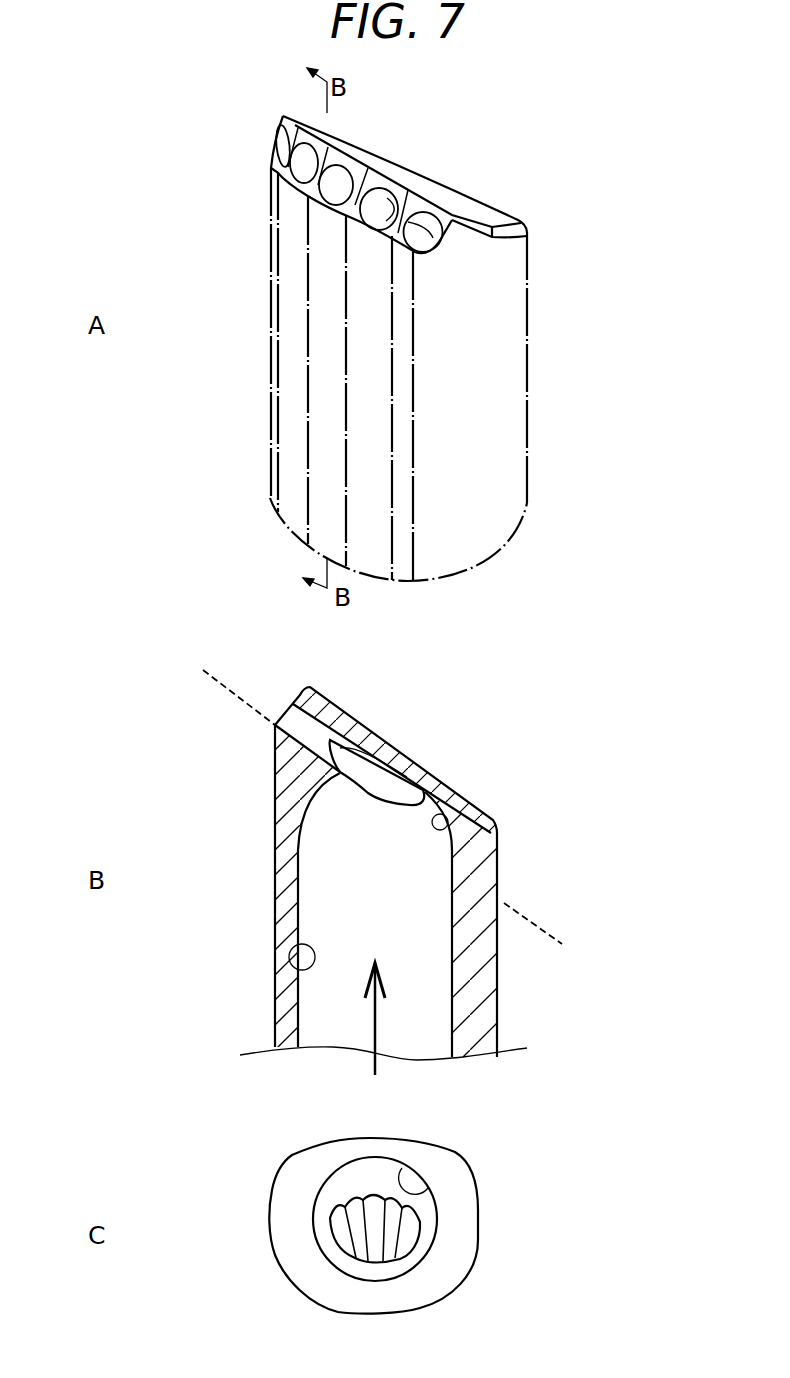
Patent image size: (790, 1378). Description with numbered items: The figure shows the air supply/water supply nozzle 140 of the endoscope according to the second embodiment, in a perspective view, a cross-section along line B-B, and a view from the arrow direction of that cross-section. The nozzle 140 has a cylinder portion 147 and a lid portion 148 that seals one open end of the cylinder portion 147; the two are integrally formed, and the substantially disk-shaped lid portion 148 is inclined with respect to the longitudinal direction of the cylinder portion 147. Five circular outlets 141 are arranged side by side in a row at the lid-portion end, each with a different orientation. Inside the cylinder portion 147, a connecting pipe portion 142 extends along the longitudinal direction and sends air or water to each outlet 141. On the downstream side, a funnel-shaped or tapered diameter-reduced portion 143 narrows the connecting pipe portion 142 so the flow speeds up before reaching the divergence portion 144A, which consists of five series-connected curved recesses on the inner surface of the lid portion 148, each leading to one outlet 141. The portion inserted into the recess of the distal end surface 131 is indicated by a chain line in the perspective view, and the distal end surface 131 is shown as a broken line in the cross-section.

The air supply/water supply nozzle 140 is at (414, 136).
The outlet 141 is at (377, 207).
The connecting pipe portion 142 is at (298, 973).
The diameter-reduced portion 143 is at (449, 817).
The divergence portion 144A is at (368, 738).
The cylinder portion 147 is at (503, 352).
The lid portion 148 is at (474, 202).
The distal end surface 131 is at (238, 698).